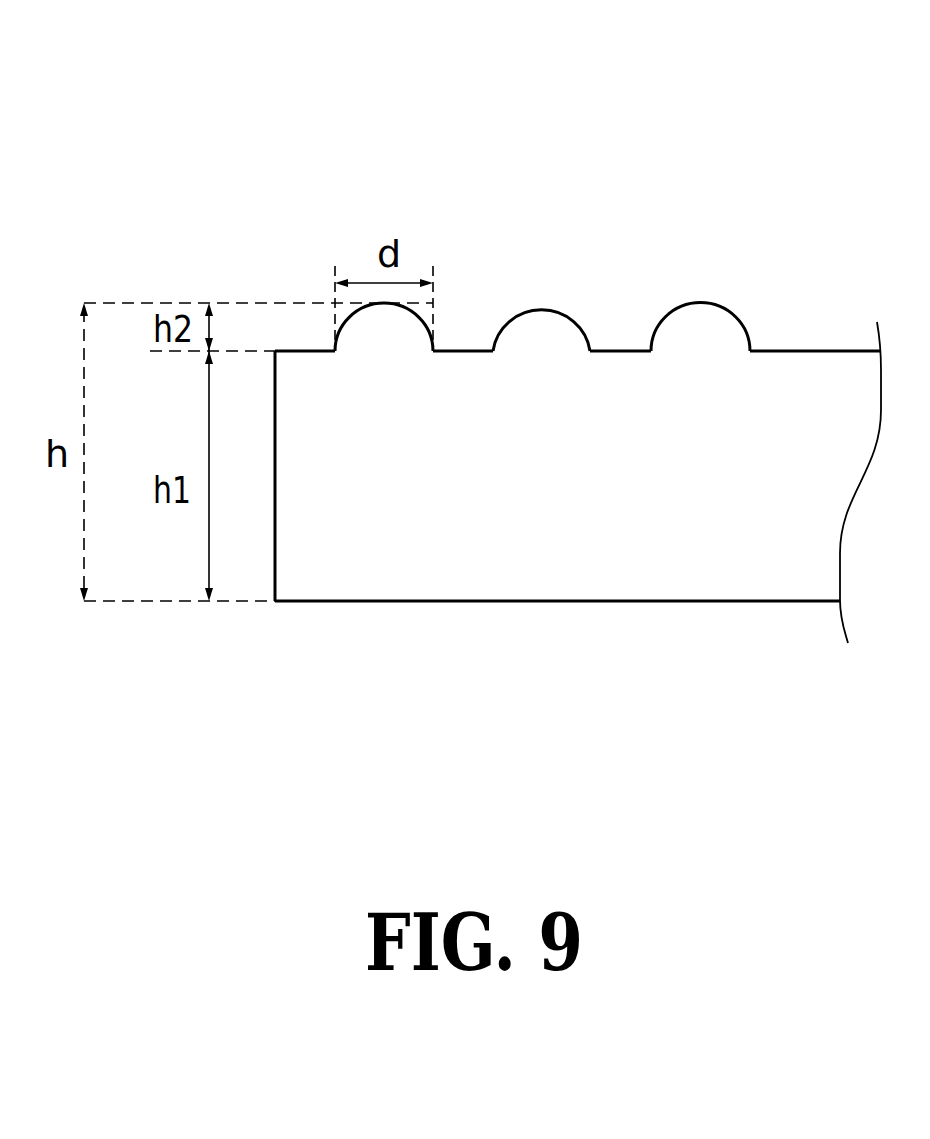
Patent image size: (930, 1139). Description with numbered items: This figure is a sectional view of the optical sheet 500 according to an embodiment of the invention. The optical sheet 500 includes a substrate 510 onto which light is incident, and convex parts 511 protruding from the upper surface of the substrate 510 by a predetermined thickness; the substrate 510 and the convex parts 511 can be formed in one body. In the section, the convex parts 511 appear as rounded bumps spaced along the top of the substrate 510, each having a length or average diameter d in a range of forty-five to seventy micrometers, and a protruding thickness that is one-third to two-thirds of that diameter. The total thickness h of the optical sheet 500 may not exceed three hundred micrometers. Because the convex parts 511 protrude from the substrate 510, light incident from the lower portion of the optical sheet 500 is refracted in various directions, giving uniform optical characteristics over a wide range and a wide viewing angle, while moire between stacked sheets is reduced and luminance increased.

The optical sheet 500 is at (756, 178).
The substrate 510 is at (373, 547).
The convex part 511 is at (570, 307).